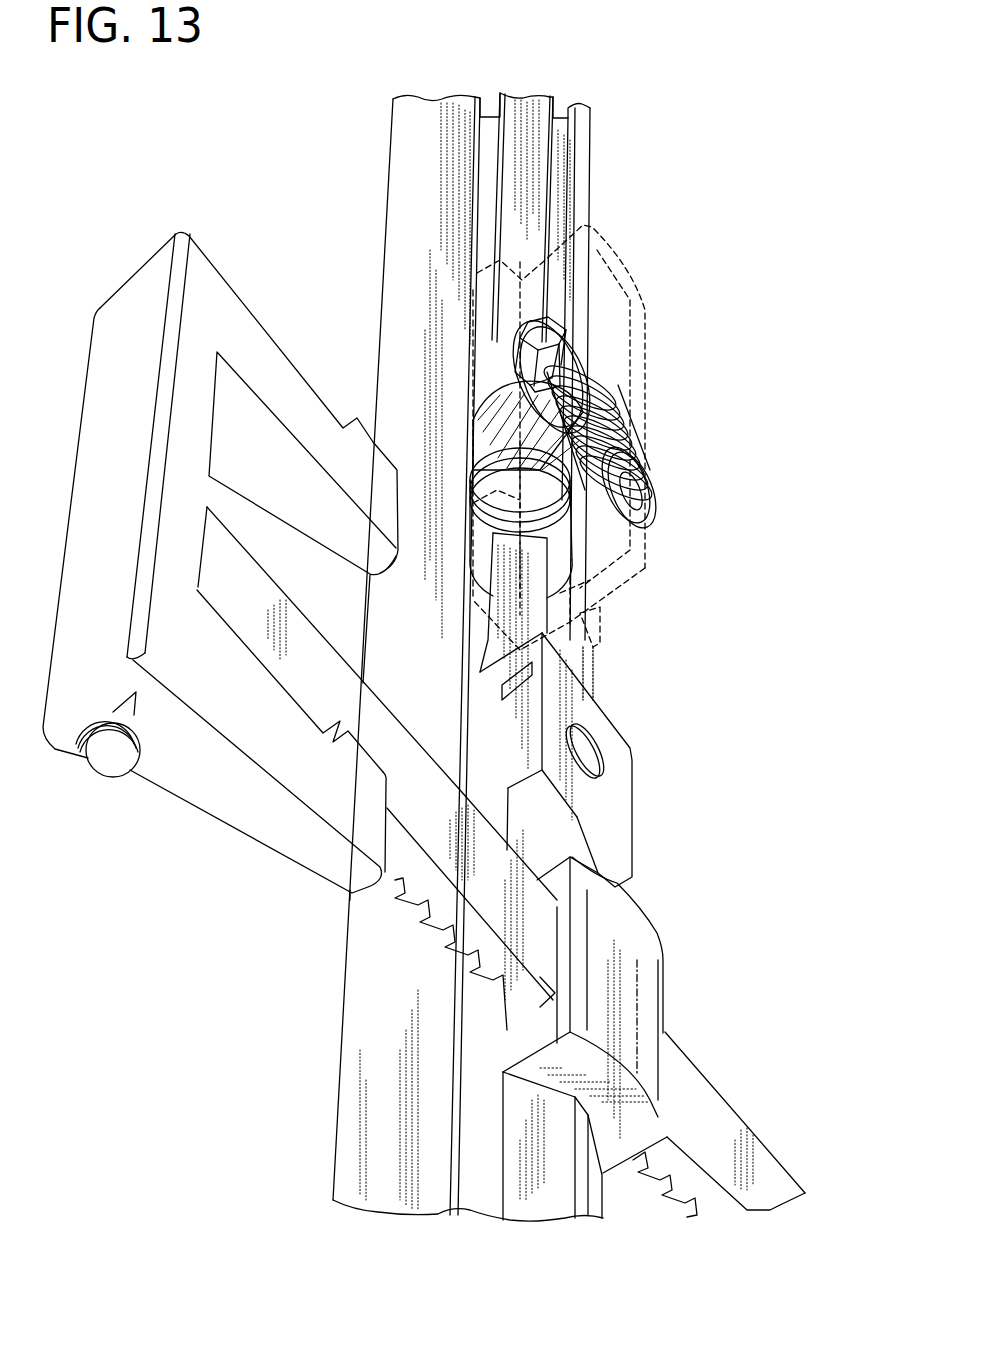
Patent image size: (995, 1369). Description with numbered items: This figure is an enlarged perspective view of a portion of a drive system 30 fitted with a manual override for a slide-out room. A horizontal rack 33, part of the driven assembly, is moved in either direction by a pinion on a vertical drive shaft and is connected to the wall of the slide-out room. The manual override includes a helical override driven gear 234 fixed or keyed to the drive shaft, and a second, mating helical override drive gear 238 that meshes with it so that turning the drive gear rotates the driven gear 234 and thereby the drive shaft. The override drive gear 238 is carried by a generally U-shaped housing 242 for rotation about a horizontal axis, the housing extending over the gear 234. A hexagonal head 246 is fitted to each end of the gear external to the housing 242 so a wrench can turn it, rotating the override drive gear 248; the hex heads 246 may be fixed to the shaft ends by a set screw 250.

The drive system 30 is at (760, 380).
The rack 33 is at (700, 1107).
The helical override driven gear 234 is at (477, 407).
The helical override drive gear 238 is at (603, 440).
The housing 242 is at (637, 328).
The hexagonal head 246 is at (533, 343).
The override drive gear 248 is at (528, 215).
The set screw 250 is at (550, 370).